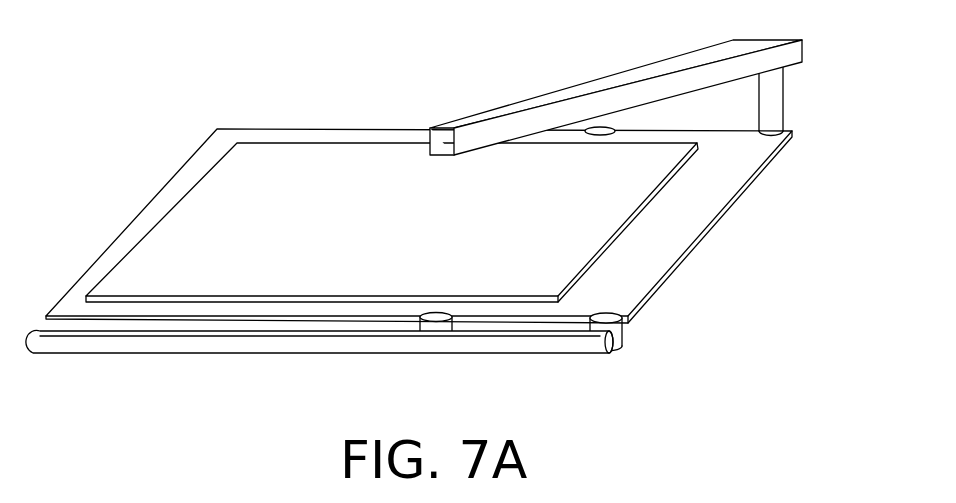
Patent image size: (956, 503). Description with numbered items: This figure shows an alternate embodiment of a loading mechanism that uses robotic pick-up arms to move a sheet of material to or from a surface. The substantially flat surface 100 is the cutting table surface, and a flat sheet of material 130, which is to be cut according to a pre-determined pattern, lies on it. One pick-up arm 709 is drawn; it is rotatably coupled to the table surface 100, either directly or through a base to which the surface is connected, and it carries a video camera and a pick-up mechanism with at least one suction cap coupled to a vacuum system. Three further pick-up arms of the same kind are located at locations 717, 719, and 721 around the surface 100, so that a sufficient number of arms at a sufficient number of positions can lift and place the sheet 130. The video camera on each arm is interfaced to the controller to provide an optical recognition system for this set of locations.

The surface 100 is at (387, 138).
The sheet of material 130 is at (612, 208).
The pick-up arm 709 is at (655, 85).
The pick-up arm location 717 is at (438, 314).
The pick-up arm location 719 is at (609, 312).
The pick-up arm location 721 is at (615, 128).